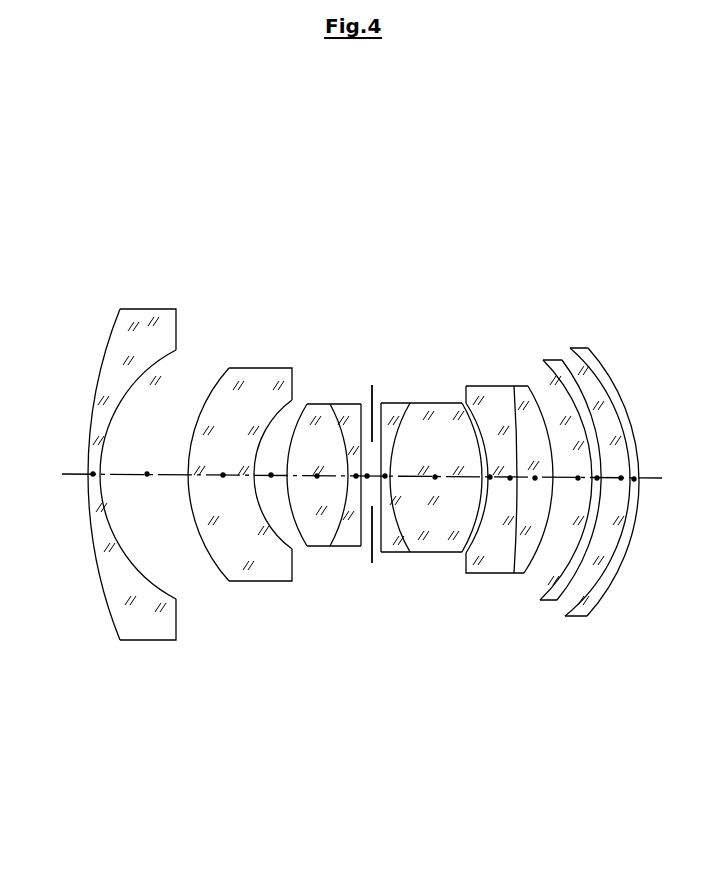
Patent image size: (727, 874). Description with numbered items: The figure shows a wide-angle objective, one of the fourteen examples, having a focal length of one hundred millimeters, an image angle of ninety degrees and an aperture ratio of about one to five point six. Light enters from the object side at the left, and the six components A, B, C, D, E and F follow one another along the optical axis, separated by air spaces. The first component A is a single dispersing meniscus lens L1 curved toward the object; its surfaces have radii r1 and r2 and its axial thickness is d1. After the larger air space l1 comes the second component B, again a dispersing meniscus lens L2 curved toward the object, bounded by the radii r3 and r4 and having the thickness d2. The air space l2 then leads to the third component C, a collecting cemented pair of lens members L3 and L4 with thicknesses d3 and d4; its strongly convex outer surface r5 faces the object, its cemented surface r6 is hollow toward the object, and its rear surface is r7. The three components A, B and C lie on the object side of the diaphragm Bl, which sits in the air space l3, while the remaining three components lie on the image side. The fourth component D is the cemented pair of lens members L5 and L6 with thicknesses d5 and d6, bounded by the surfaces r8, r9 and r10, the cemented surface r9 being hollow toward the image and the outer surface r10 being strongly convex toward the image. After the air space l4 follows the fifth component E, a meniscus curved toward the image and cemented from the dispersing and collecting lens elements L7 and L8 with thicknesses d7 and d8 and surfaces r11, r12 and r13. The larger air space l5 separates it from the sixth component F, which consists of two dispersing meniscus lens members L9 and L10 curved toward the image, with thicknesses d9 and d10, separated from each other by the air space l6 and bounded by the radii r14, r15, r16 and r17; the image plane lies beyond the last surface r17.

The first lens component A is at (68, 140).
The second lens component B is at (150, 140).
The third lens component C is at (275, 146).
The fourth lens component D is at (395, 146).
The fifth lens component E is at (512, 147).
The sixth lens component F is at (672, 149).
The lens member L1 is at (68, 205).
The lens member L2 is at (150, 205).
The lens member L3 is at (227, 207).
The lens member L4 is at (267, 207).
The lens member L5 is at (345, 207).
The lens member L6 is at (387, 209).
The lens element L7 is at (464, 209).
The lens element L8 is at (505, 210).
The lens member L9 is at (585, 213).
The lens member L10 is at (665, 215).
The lens thickness d1 is at (93, 474).
The lens thickness d2 is at (223, 475).
The lens thickness d3 is at (317, 476).
The lens thickness d4 is at (356, 476).
The lens thickness d5 is at (385, 476).
The lens thickness d6 is at (435, 477).
The lens thickness d7 is at (510, 478).
The lens thickness d8 is at (535, 478).
The lens thickness d9 is at (597, 478).
The lens thickness d10 is at (634, 479).
The air space l1 is at (147, 474).
The air space l2 is at (271, 475).
The air space l3 is at (367, 476).
The air space l4 is at (490, 477).
The air space l5 is at (578, 478).
The air space l6 is at (621, 478).
The diaphragm Bl is at (372, 388).
The radius of curvature r1 is at (97, 587).
The radius of curvature r2 is at (138, 573).
The radius of curvature r3 is at (193, 530).
The radius of curvature r4 is at (260, 520).
The radius of curvature r5 is at (292, 520).
The radius of curvature r6 is at (345, 527).
The radius of curvature r7 is at (359, 542).
The radius of curvature r8 is at (379, 547).
The radius of curvature r9 is at (400, 537).
The radius of curvature r10 is at (456, 541).
The radius of curvature r11 is at (478, 547).
The radius of curvature r12 is at (511, 541).
The radius of curvature r13 is at (531, 562).
The radius of curvature r14 is at (557, 572).
The radius of curvature r15 is at (582, 562).
The radius of curvature r16 is at (606, 556).
The radius of curvature r17 is at (623, 560).